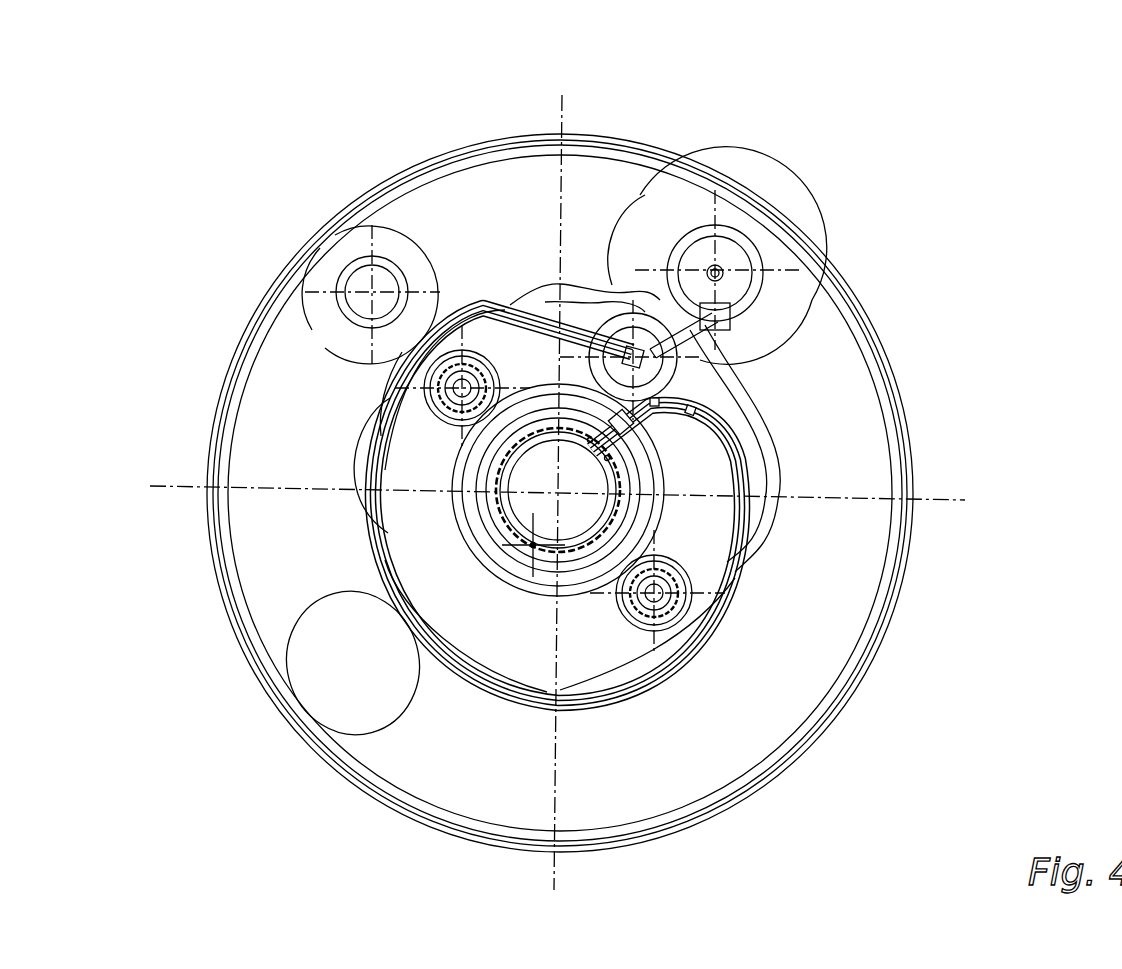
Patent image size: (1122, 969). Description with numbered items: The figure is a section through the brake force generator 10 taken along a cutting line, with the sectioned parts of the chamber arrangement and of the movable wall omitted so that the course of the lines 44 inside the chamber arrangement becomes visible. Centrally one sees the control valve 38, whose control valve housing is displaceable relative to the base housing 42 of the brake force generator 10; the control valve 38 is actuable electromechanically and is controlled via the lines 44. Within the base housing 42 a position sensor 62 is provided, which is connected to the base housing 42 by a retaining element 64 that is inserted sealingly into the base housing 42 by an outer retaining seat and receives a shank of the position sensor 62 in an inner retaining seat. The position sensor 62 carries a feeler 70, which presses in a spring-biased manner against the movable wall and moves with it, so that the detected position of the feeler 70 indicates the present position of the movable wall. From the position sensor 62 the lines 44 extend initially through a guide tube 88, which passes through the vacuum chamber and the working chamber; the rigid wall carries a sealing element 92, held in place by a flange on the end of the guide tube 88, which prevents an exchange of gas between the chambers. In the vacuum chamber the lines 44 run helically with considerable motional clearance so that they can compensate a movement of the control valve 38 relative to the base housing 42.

The brake force generator 10 is at (945, 444).
The control valve 38 is at (520, 508).
The base housing 42 is at (893, 383).
The lines 44 is at (735, 578).
The position sensor 62 is at (730, 250).
The retaining element 64 is at (740, 330).
The feeler 70 is at (724, 272).
The guide tube 88 is at (645, 313).
The sealing element 92 is at (648, 317).